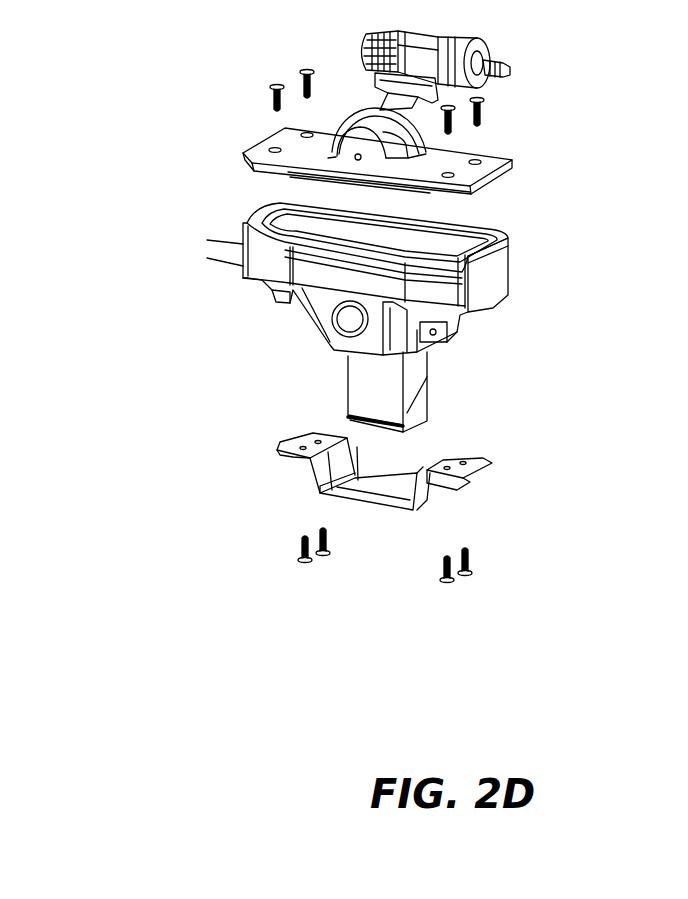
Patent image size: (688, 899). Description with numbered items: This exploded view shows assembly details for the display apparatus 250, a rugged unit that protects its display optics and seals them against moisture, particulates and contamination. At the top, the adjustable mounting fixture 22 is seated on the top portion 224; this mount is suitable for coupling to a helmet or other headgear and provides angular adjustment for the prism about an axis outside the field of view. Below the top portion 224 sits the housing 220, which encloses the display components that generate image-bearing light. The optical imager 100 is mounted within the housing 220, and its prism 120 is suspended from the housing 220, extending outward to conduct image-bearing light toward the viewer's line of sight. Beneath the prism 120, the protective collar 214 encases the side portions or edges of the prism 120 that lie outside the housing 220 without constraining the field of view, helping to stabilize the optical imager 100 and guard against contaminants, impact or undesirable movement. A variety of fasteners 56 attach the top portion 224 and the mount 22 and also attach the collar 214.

The display apparatus 250 is at (88, 84).
The top portion 224 is at (277, 140).
The adjustable mounting fixture 22 is at (502, 80).
The fasteners 56 is at (307, 70).
The housing 220 is at (513, 273).
The optical imager 100 is at (478, 370).
The prism 120 is at (362, 380).
The protective collar 214 is at (457, 490).